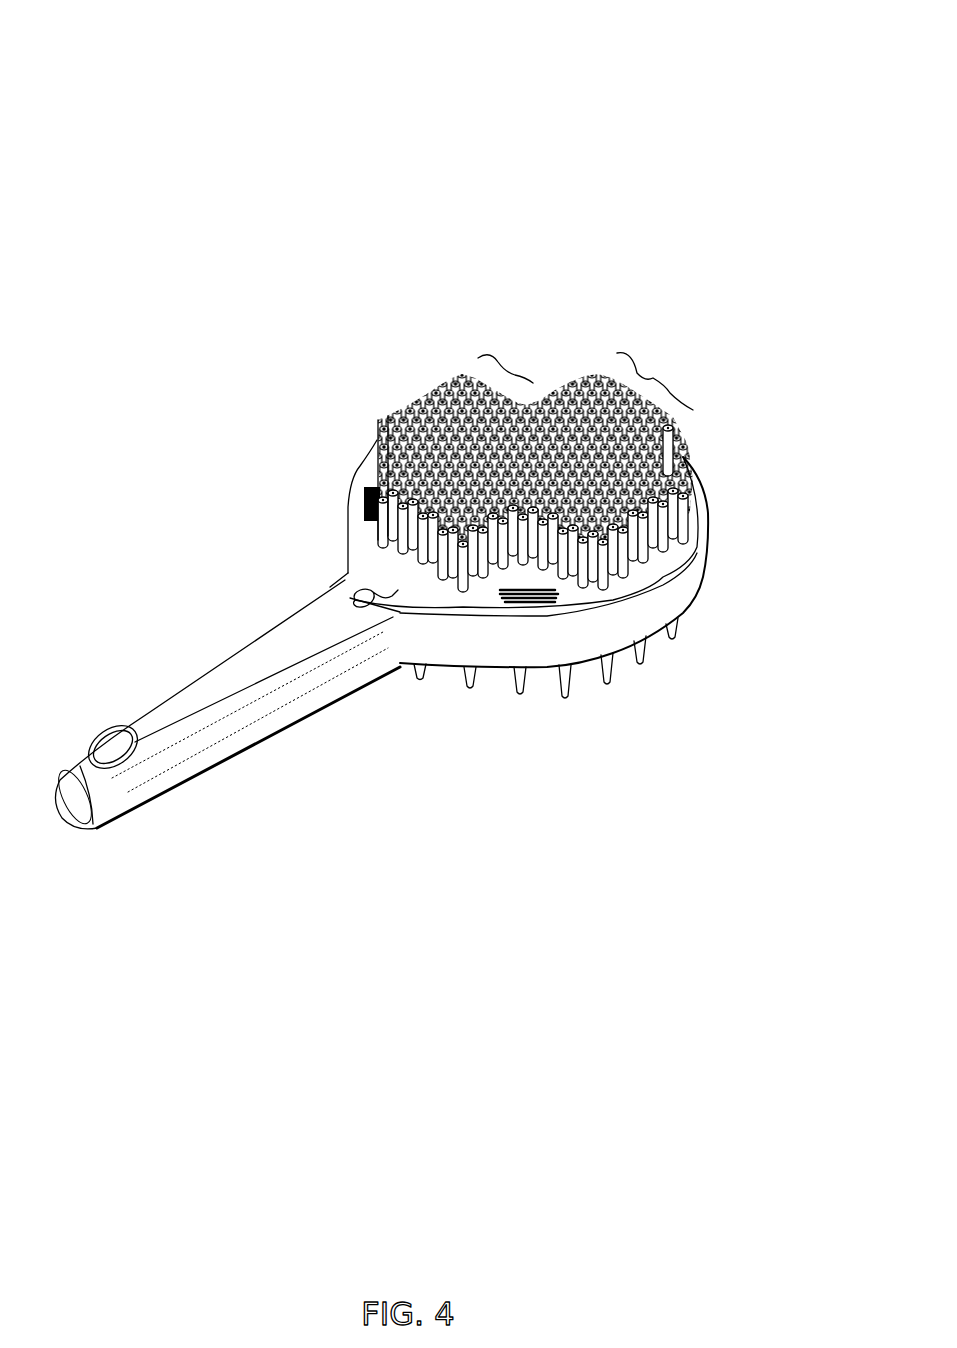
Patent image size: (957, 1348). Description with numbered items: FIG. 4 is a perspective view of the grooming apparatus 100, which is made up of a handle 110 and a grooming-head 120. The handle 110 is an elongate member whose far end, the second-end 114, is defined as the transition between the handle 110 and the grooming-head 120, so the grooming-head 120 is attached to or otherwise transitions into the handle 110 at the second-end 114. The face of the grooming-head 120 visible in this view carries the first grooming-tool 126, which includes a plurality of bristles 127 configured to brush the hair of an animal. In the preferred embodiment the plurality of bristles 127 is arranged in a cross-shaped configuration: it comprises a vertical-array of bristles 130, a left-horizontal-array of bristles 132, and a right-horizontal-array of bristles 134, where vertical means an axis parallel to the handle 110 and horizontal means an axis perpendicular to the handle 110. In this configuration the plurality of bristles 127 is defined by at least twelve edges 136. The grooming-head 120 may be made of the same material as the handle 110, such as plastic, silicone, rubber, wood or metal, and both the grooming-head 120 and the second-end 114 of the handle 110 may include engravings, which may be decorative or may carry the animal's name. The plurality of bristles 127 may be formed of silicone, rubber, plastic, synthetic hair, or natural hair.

The apparatus 100 is at (778, 38).
The handle 110 is at (176, 698).
The second-end 114 is at (403, 648).
The grooming-head 120 is at (650, 617).
The first grooming-tool 126 is at (687, 503).
The plurality of bristles 127 is at (433, 390).
The vertical-array of bristles 130 is at (657, 378).
The left-horizontal-array of bristles 132 is at (518, 385).
The right-horizontal-array of bristles 134 is at (667, 470).
The edges 136 is at (377, 417).